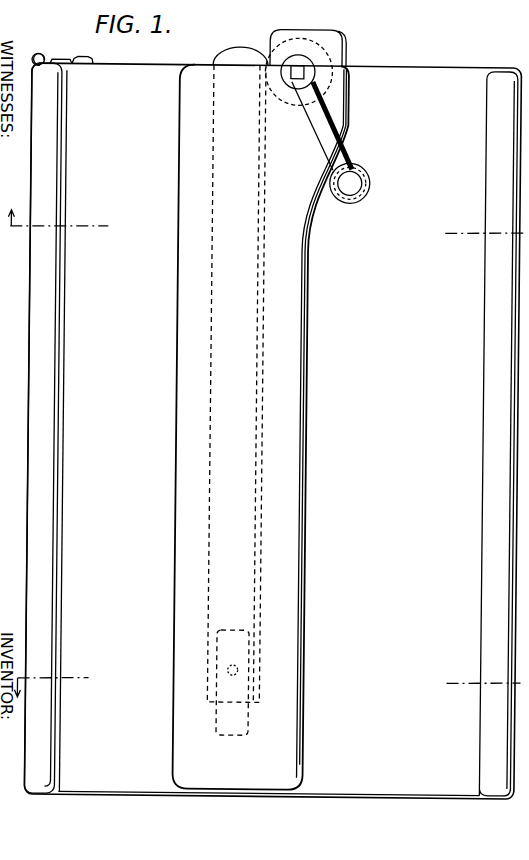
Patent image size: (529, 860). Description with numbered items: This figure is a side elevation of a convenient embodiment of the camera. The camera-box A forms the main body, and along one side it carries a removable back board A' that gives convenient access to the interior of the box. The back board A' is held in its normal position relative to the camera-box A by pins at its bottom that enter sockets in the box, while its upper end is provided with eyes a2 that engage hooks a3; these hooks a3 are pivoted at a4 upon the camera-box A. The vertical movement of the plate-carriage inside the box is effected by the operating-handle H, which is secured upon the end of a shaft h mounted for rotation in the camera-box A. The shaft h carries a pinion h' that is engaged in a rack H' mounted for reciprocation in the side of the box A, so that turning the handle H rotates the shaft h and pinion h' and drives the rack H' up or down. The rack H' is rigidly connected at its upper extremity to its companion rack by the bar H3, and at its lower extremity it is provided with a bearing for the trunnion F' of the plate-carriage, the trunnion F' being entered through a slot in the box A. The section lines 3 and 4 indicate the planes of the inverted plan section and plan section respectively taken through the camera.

The camera-box A is at (272, 431).
The removable back board A' is at (33, 428).
The eyes a2 is at (41, 48).
The hooks a3 is at (61, 52).
The pivot of hooks a4 is at (85, 52).
The rack H' is at (260, 428).
The bar H3 is at (238, 55).
The pinion h' is at (322, 67).
The shaft h is at (296, 97).
The operating-handle H is at (345, 143).
The trunnion F' is at (245, 683).
The section line 3 3 is at (266, 233).
The section line 4 4 is at (269, 679).